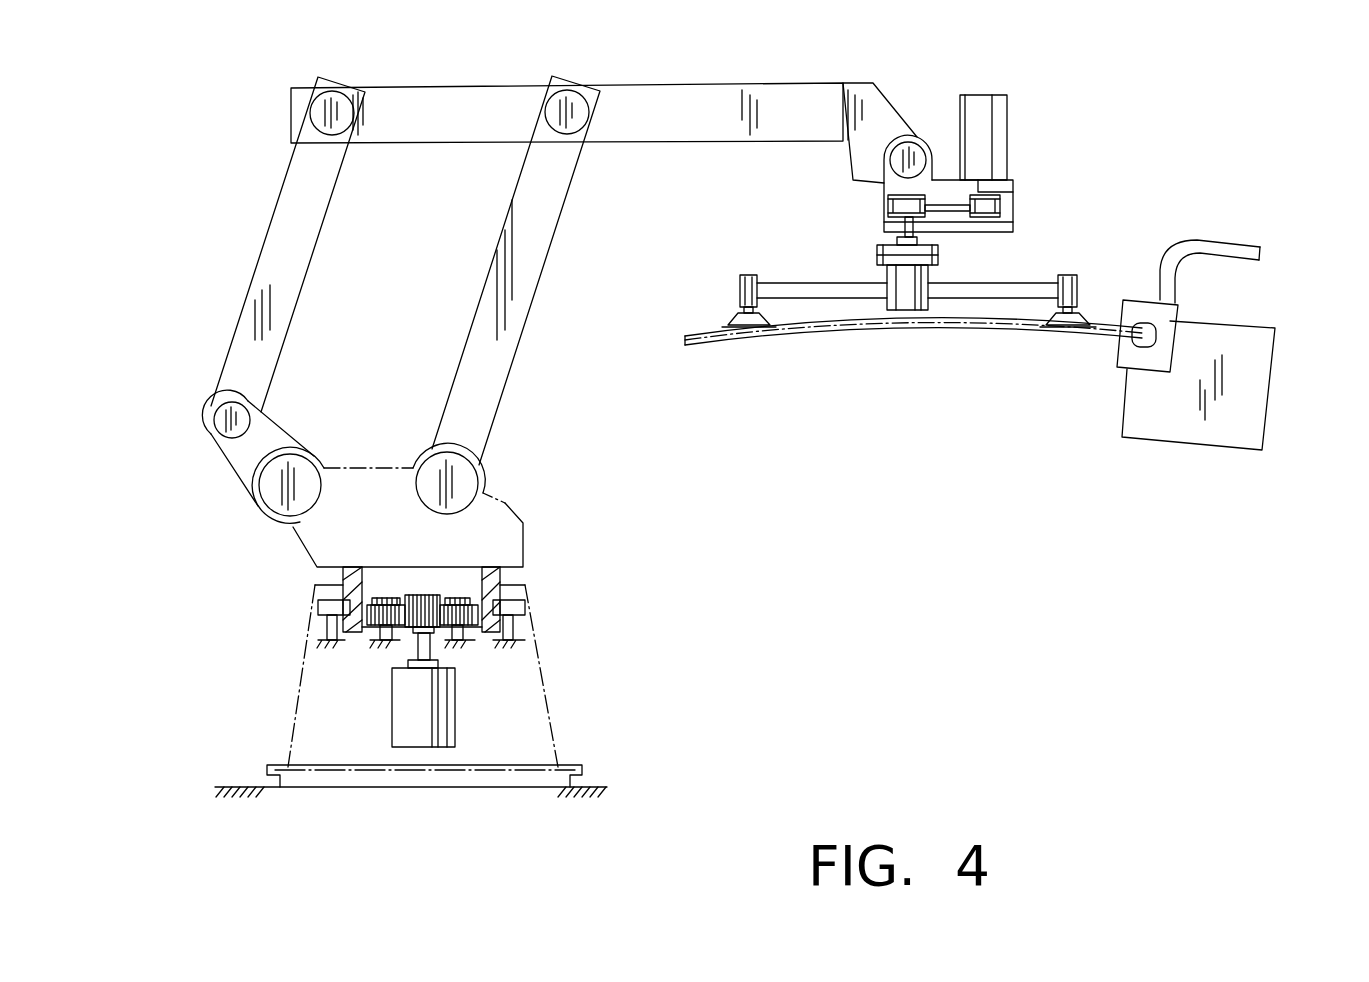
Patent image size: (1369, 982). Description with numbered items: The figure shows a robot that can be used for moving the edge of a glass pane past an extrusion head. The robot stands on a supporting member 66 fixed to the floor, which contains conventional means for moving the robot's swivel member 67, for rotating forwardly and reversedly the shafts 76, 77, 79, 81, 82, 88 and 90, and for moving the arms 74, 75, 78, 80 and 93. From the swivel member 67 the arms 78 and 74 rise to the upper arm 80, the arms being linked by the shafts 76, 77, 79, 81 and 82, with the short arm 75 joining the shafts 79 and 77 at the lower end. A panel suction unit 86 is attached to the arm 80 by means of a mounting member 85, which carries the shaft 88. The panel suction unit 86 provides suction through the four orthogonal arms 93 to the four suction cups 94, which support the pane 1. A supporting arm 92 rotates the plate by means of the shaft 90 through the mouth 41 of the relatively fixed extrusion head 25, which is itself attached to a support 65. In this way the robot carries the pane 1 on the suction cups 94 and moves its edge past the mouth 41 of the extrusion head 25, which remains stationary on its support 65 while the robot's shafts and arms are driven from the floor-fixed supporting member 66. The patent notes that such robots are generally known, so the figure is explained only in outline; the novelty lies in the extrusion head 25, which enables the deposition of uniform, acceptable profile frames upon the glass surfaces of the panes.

The pane 1 is at (917, 327).
The extrusion head 25 is at (1175, 333).
The mouth 41 is at (1142, 305).
The support 65 is at (1270, 397).
The supporting member 66 is at (528, 715).
The swivel member 67 is at (508, 548).
The arm 74 is at (518, 335).
The arm 75 is at (237, 448).
The shaft 76 is at (463, 483).
The shaft 77 is at (280, 485).
The arm 78 is at (300, 210).
The shaft 79 is at (213, 420).
The arm 80 is at (663, 105).
The shaft 81 is at (577, 120).
The shaft 82 is at (343, 112).
The mounting member 85 is at (887, 105).
The panel suction unit 86 is at (873, 198).
The shaft 88 is at (884, 162).
The shaft 90 is at (888, 225).
The supporting arm 92 is at (920, 280).
The orthogonal arms 93 is at (842, 292).
The suction cups 94 is at (740, 330).